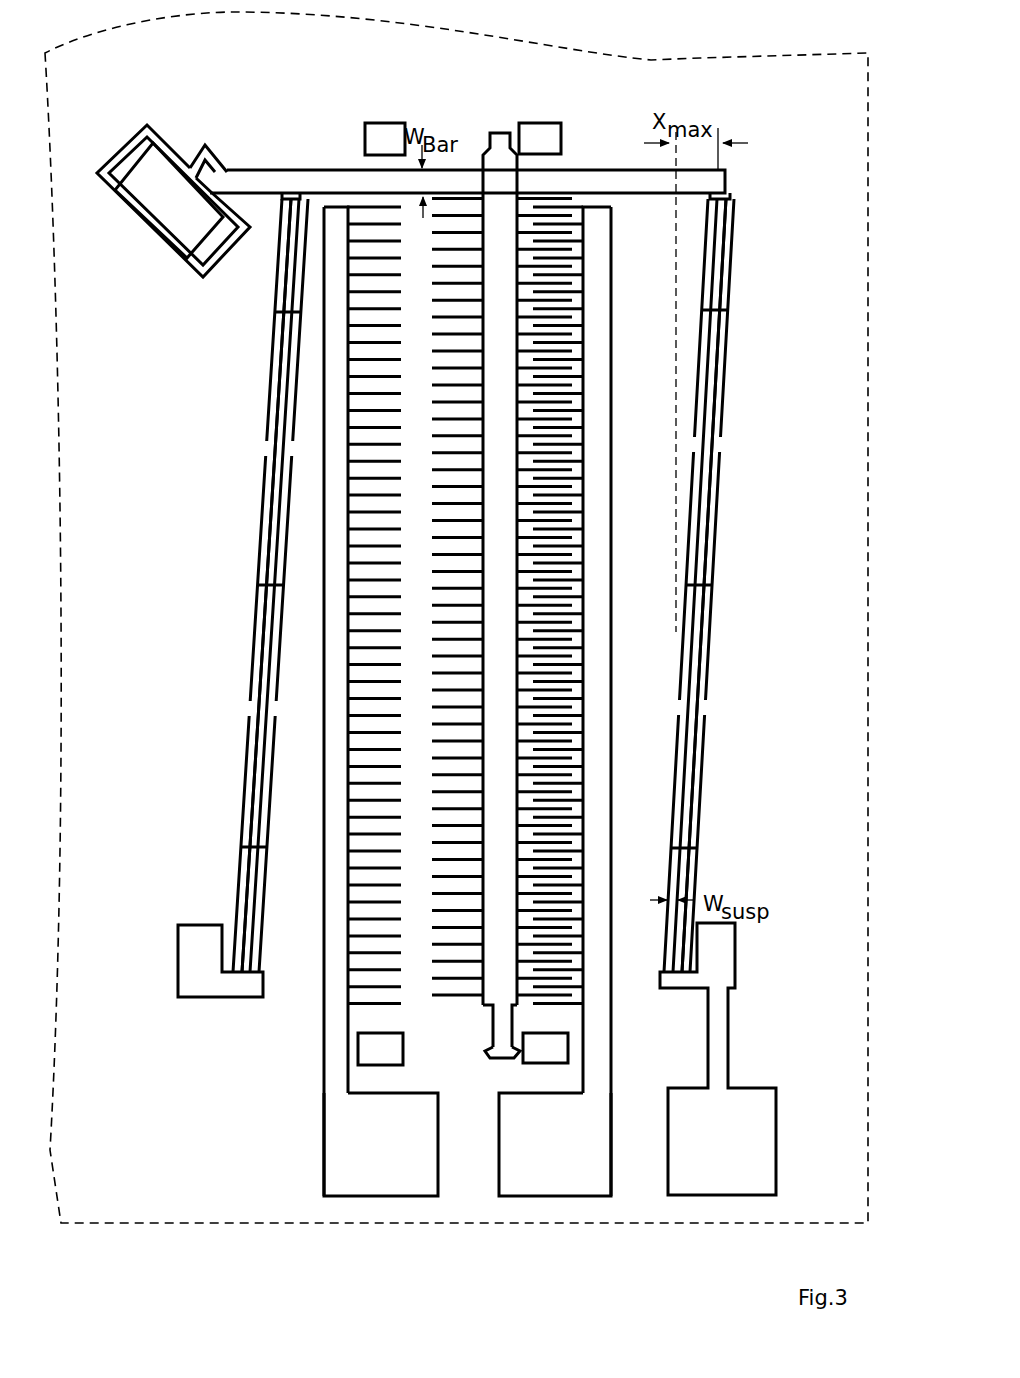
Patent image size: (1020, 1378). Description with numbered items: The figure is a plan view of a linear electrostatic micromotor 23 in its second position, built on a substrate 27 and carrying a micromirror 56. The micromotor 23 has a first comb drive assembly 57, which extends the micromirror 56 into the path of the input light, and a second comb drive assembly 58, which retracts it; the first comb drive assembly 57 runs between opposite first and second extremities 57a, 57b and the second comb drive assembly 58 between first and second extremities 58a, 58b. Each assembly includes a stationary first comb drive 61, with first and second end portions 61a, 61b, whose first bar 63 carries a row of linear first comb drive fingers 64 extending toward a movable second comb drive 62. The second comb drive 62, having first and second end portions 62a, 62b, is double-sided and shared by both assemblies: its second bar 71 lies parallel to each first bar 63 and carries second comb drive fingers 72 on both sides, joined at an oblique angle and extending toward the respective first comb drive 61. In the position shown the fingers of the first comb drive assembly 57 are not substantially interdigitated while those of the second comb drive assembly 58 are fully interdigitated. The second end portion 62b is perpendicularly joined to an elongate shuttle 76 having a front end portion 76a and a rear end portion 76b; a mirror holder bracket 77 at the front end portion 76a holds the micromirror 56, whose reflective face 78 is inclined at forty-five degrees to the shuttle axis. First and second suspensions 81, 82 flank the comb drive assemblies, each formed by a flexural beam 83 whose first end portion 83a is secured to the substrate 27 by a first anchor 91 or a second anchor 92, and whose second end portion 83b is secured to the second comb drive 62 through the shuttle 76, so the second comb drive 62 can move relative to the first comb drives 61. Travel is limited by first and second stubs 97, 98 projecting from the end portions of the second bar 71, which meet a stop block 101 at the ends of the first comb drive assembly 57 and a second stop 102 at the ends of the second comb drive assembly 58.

The first micromotor 23 is at (766, 113).
The substrate 27 is at (650, 58).
The micromirror 56 is at (140, 216).
The first comb drive assembly 57 is at (322, 662).
The first extremity of first comb drive assembly 57a is at (322, 988).
The second extremity of first comb drive assembly 57b is at (330, 204).
The second comb drive assembly 58 is at (599, 701).
The first extremity of second comb drive assembly 58a is at (615, 1000).
The second extremity of second comb drive assembly 58b is at (613, 252).
The first comb drive 61 is at (449, 701).
The first end portion of first comb drive 61a is at (322, 942).
The second end portion of first comb drive 61b is at (304, 283).
The second comb drive 62 is at (515, 577).
The first end portion of second comb drive 62a is at (492, 1022).
The second end portion of second comb drive 62b is at (446, 210).
The first bar 63 is at (322, 855).
The first comb drive fingers 64 is at (372, 228).
The second bar 71 is at (480, 568).
The second comb drive fingers 72 is at (443, 316).
The shuttle 76 is at (490, 149).
The front end portion of shuttle 76a is at (256, 169).
The rear end portion of shuttle 76b is at (728, 192).
The mirror holder bracket 77 is at (178, 150).
The reflective face 78 is at (166, 246).
The first suspension 81 is at (252, 598).
The second suspension 82 is at (716, 628).
The flexural beam 83 is at (471, 585).
The first end portion of flexural beam 83a is at (242, 885).
The second end portion of flexural beam 83b is at (290, 247).
The first anchor 91 is at (178, 985).
The second anchor 92 is at (738, 950).
The first stub 97 is at (490, 1057).
The second stub 98 is at (508, 133).
The stop block 101 is at (392, 113).
The second stop 102 is at (548, 123).